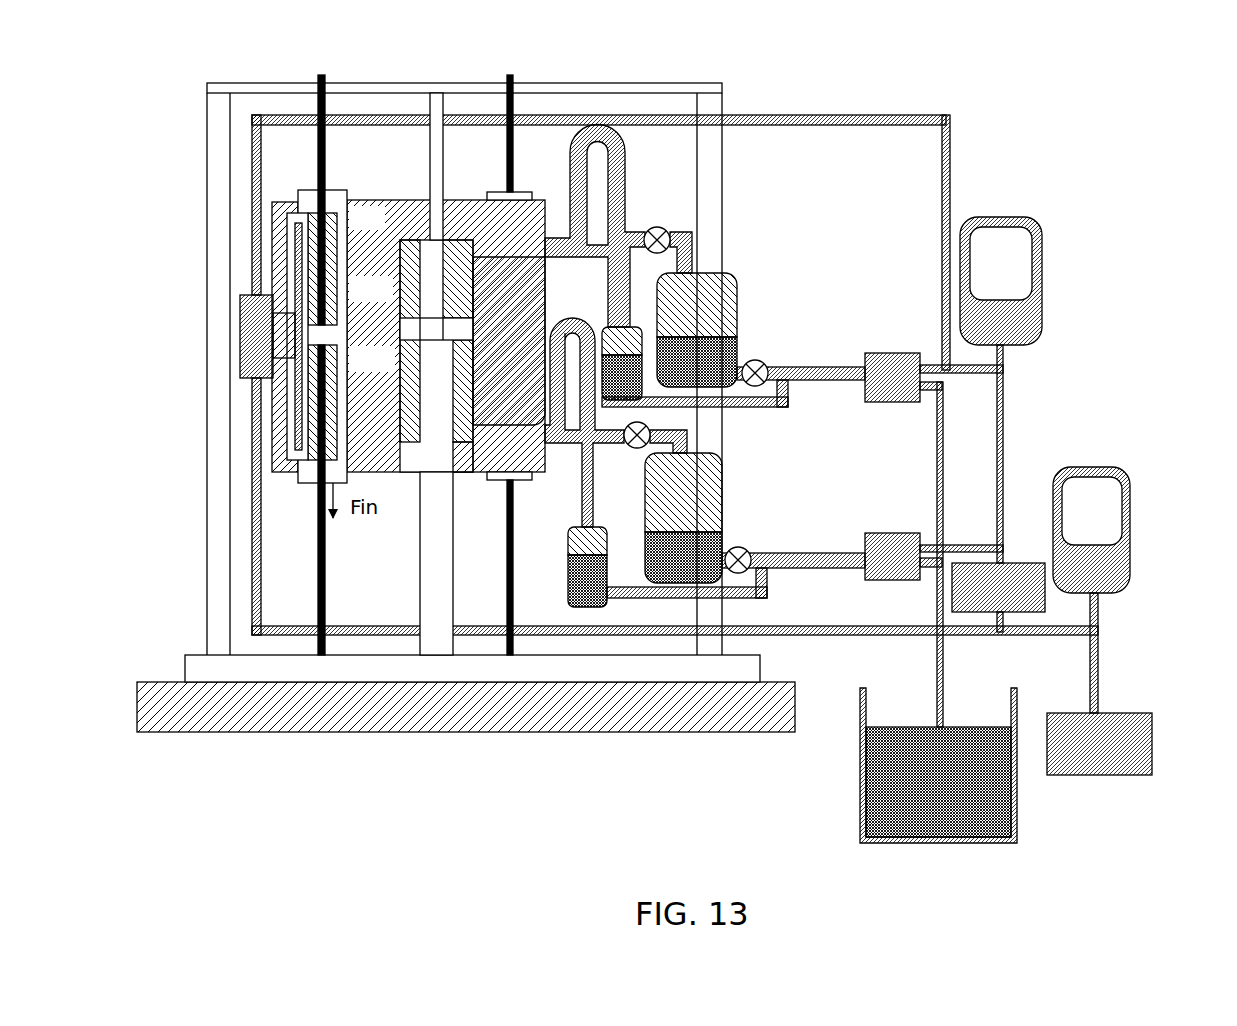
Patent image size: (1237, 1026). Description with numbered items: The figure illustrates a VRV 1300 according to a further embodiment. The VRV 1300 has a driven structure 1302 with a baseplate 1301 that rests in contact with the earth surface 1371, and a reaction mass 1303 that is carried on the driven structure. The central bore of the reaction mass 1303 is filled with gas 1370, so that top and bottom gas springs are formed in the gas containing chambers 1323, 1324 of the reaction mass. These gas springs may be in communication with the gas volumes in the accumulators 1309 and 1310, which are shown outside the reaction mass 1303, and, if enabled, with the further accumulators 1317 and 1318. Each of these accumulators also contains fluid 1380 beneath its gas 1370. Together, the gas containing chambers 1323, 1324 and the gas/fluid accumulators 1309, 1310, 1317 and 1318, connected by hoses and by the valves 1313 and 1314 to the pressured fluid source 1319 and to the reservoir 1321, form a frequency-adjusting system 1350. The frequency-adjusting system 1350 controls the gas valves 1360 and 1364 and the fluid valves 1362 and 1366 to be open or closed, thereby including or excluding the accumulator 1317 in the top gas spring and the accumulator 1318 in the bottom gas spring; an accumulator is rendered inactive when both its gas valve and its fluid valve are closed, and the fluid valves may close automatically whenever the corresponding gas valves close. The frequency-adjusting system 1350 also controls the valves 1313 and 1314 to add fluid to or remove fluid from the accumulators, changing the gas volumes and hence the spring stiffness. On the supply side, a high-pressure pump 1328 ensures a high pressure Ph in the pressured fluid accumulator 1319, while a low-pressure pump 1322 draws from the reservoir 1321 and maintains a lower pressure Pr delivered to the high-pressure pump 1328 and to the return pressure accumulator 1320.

The VRV 1300 is at (1066, 42).
The baseplate 1301 is at (186, 668).
The driven structure 1302 is at (362, 86).
The reaction mass 1303 is at (408, 374).
The accumulator 1309 is at (600, 330).
The accumulator 1310 is at (570, 578).
The valve 1313 is at (893, 353).
The valve 1314 is at (893, 533).
The accumulator 1317 is at (738, 320).
The accumulator 1318 is at (724, 478).
The pressured fluid source 1319 is at (1042, 312).
The return pressure accumulator 1320 is at (1130, 568).
The reservoir 1321 is at (860, 762).
The low-pressure pump 1322 is at (1152, 744).
The gas containing chamber 1323 is at (468, 284).
The gas containing chamber 1324 is at (468, 396).
The high-pressure pump 1328 is at (1022, 562).
The frequency-adjusting system 1350 is at (190, 820).
The gas valve 1360 is at (656, 226).
The fluid valve 1362 is at (762, 386).
The gas valve 1364 is at (630, 450).
The fluid valve 1366 is at (742, 548).
The gas 1370 is at (694, 288).
The earth surface 1371 is at (685, 733).
The fluid 1380 is at (692, 350).